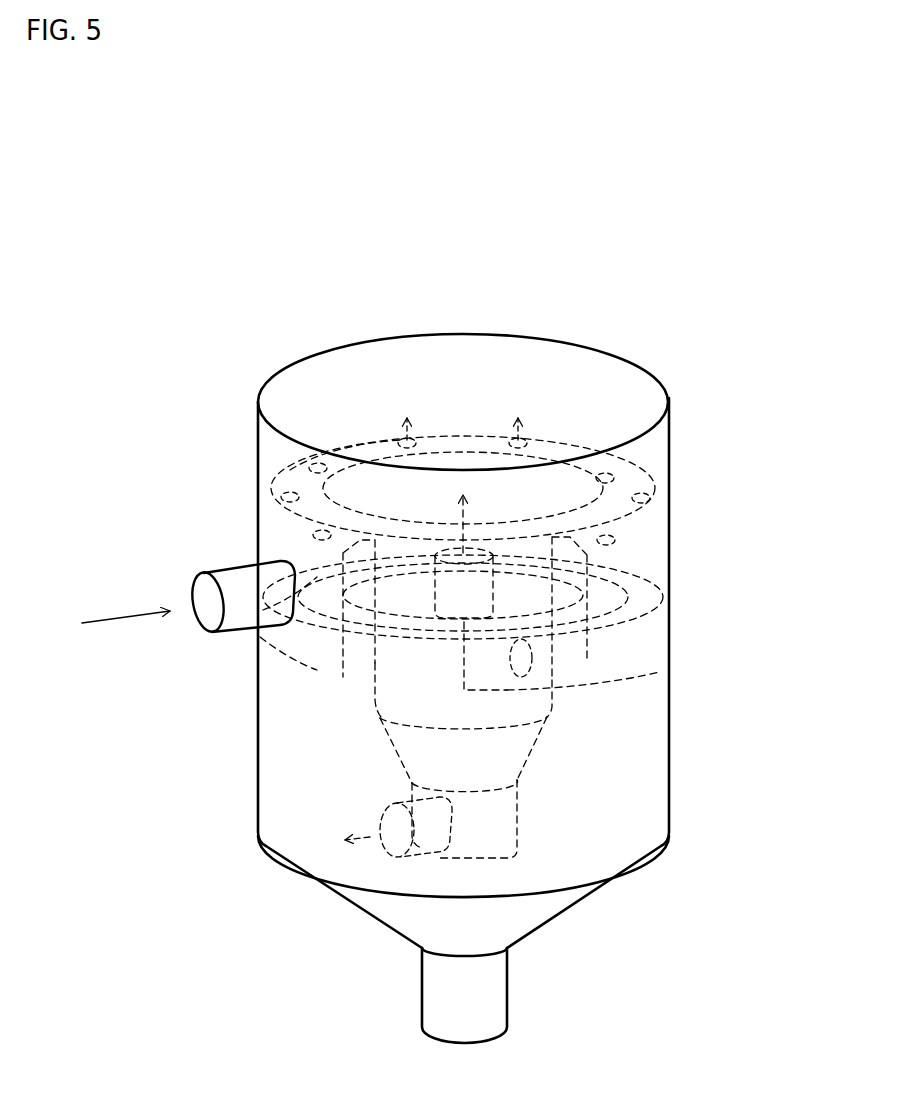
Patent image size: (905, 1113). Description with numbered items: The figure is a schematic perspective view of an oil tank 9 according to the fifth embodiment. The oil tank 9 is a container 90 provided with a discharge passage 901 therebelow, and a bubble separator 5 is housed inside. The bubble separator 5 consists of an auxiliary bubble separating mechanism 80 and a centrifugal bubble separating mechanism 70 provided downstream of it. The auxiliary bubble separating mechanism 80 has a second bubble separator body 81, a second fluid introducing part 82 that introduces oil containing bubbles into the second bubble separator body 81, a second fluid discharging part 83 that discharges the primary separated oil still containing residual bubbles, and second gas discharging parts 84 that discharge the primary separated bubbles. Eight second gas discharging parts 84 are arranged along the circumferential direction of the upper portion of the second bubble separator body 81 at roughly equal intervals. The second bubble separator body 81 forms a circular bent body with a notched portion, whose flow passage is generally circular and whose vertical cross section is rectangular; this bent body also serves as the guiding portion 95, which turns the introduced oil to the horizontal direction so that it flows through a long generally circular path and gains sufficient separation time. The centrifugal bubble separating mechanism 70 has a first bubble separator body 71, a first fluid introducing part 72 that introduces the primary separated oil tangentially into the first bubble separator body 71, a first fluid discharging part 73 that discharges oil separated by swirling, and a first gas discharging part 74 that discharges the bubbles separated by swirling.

The bubble separator 5 is at (373, 722).
The oil tank 9 is at (685, 396).
The centrifugal bubble separating mechanism 70 is at (605, 728).
The first bubble separator body 71 is at (660, 672).
The first fluid introducing part 72 is at (665, 610).
The first fluid discharging part 73 is at (383, 840).
The first gas discharging part 74 is at (290, 470).
The auxiliary bubble separating mechanism 80 is at (240, 490).
The second bubble separator body 81 is at (655, 565).
The second fluid introducing part 82 is at (236, 622).
The second fluid discharging part 83 is at (679, 620).
The second gas discharging parts 84 is at (317, 462).
The container 90 is at (670, 785).
The guiding portion 95 is at (563, 500).
The discharge passage 901 is at (490, 1008).